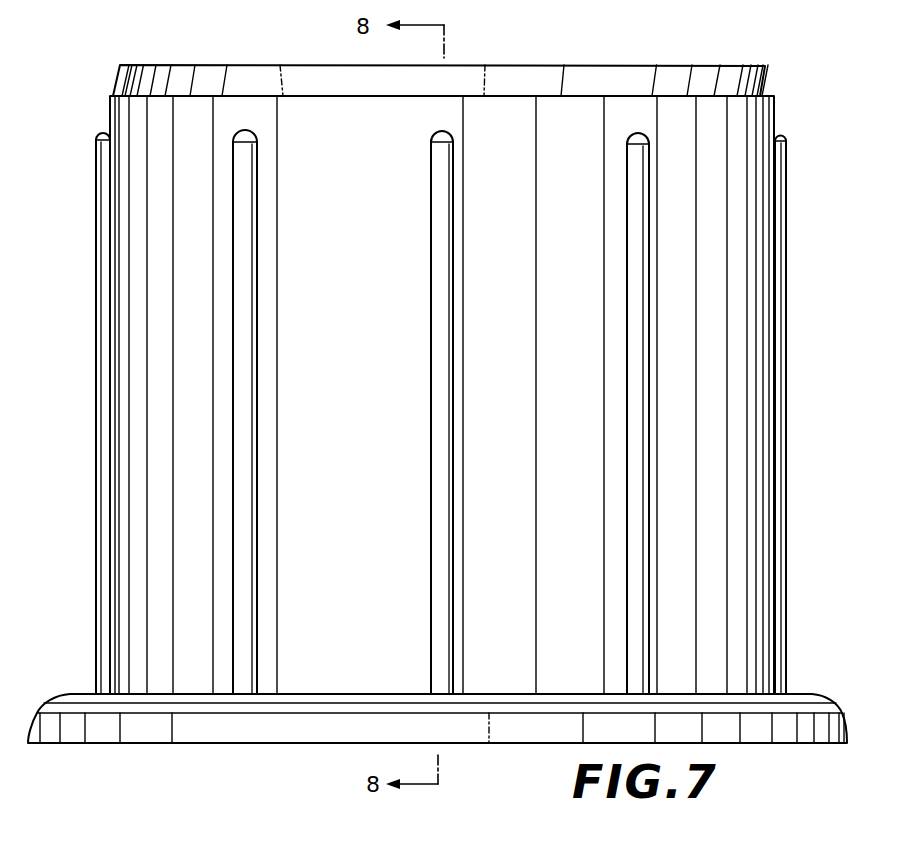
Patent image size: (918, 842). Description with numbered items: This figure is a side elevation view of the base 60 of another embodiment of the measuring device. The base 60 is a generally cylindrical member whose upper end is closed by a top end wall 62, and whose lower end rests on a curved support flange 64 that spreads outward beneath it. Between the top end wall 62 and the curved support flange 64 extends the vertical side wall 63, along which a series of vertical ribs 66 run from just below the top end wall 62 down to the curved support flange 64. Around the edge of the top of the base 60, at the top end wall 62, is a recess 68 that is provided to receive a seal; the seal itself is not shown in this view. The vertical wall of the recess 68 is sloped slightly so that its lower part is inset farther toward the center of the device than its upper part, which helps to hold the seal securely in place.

The base 60 is at (848, 152).
The top end wall 62 is at (578, 66).
The vertical side wall 63 is at (750, 220).
The curved support flange 64 is at (825, 712).
The vertical ribs 66 is at (108, 395).
The recess 68 is at (121, 80).